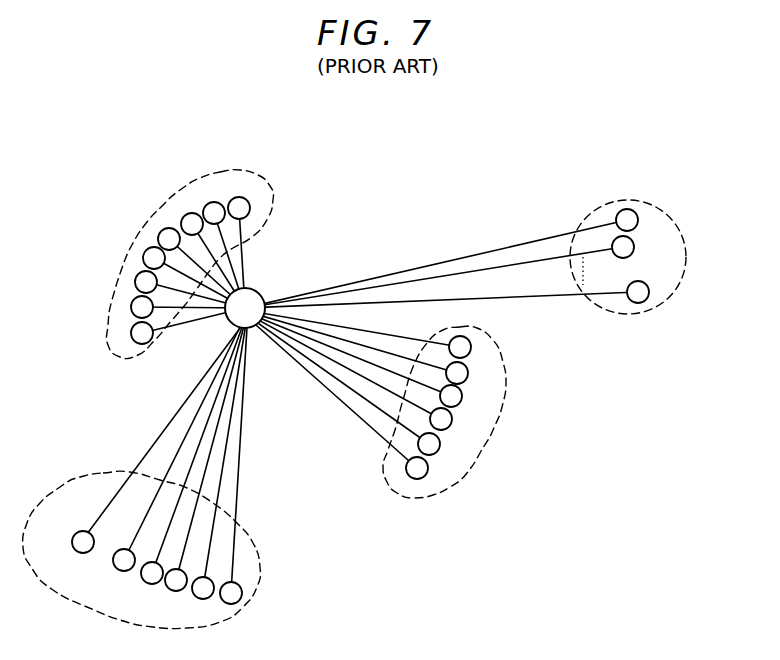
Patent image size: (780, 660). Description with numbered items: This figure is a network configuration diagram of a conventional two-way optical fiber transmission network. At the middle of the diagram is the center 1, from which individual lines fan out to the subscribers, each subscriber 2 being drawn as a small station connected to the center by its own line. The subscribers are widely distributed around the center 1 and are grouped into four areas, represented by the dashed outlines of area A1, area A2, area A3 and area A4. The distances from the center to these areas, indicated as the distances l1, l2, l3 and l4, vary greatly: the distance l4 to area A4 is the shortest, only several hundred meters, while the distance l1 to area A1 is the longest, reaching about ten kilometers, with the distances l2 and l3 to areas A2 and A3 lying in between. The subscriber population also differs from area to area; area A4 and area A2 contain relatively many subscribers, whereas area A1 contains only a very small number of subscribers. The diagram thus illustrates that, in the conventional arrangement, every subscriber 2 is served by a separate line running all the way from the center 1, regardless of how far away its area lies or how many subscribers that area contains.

The center 1 is at (263, 297).
The subscriber station S 2 is at (638, 303).
The area A1 is at (628, 239).
The area A2 is at (156, 550).
The area A3 is at (452, 412).
The area A4 is at (203, 260).
The distance from the center to the area l1 is at (441, 264).
The distance from the center to the area l2 is at (169, 452).
The distance from the center to the area l3 is at (349, 387).
The distance from the center to the area l4 is at (203, 270).